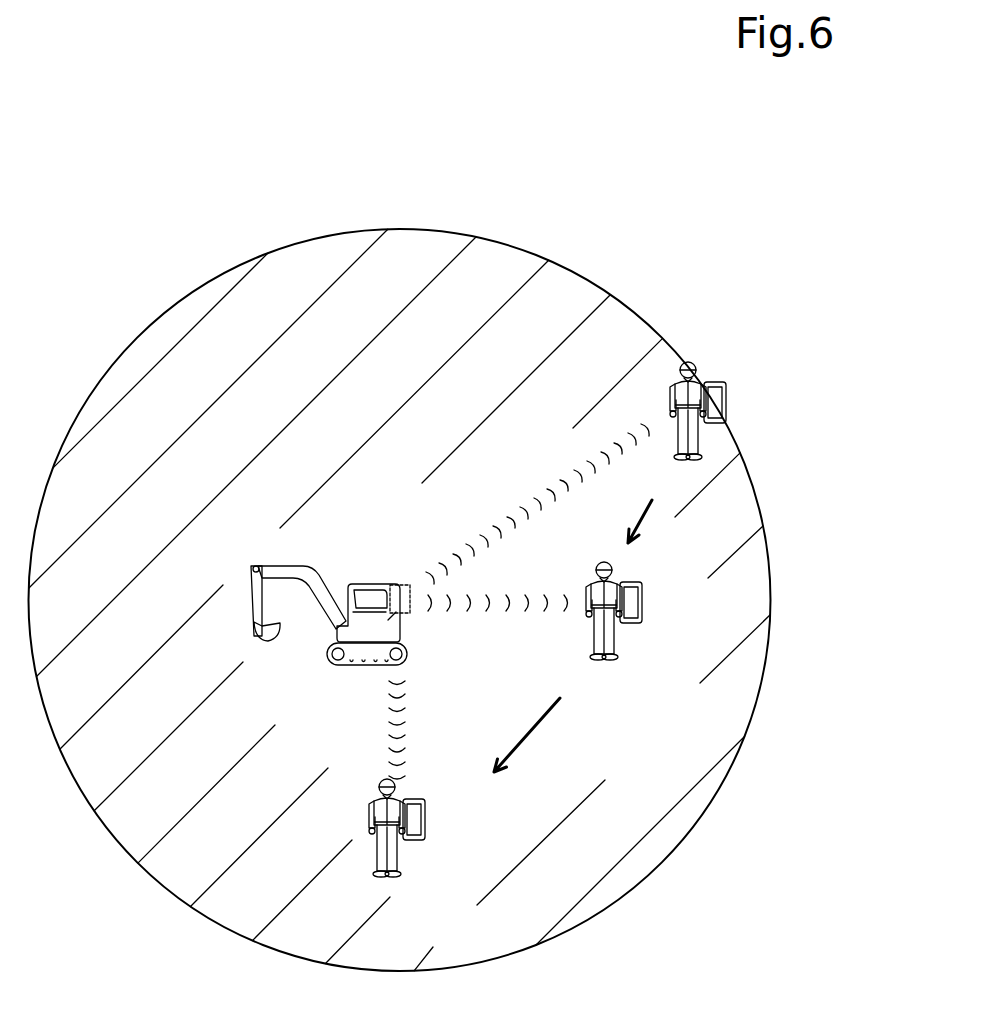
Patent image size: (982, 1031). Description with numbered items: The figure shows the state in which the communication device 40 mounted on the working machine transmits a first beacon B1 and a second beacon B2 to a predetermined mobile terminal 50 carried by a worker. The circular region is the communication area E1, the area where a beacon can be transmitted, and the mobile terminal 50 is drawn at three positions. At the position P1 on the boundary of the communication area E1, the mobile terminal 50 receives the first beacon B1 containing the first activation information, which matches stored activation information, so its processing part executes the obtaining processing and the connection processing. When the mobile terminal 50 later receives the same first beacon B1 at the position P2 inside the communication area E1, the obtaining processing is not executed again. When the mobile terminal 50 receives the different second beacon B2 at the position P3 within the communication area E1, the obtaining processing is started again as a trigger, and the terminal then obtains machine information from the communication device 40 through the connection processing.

The communication area E1 is at (568, 267).
The communication device 40 is at (400, 585).
The mobile terminal 50 is at (710, 382).
The first beacon B1 is at (536, 507).
The second beacon B2 is at (397, 722).
The position P1 is at (740, 407).
The position P2 is at (639, 641).
The position P3 is at (423, 859).